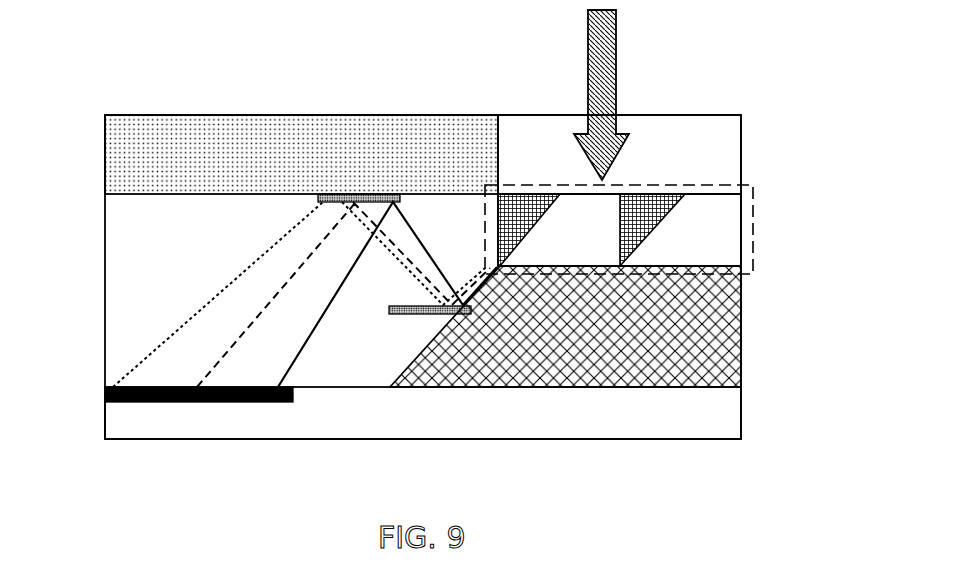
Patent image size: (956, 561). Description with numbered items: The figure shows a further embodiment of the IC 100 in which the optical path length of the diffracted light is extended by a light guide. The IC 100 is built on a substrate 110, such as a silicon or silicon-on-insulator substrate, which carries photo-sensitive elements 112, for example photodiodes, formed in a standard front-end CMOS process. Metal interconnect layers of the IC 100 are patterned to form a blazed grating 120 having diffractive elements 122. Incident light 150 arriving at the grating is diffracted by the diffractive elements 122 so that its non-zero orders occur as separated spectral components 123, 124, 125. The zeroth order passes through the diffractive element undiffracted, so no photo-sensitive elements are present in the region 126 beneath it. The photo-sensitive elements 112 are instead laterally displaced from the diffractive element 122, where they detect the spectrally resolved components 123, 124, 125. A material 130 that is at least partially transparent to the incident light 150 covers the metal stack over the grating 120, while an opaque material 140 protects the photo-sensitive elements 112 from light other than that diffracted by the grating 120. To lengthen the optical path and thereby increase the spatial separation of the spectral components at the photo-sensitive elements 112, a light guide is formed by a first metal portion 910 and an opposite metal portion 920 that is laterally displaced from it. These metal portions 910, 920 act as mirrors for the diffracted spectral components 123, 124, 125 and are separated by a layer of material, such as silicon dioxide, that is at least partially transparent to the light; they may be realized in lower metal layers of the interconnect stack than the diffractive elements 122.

The IC 100 is at (447, 484).
The substrate 110 is at (602, 418).
The photo-sensitive elements 112 is at (295, 398).
The blazed grating 120 is at (755, 191).
The diffractive elements 122 is at (573, 240).
The spectral component 123 is at (303, 335).
The spectral component 124 is at (222, 353).
The spectral component 125 is at (150, 355).
The region 126 is at (742, 360).
The material 130 is at (683, 140).
The opaque material 140 is at (378, 128).
The incident light 150 is at (587, 52).
The first metal portion 910 is at (402, 315).
The opposite metal portion 920 is at (313, 202).